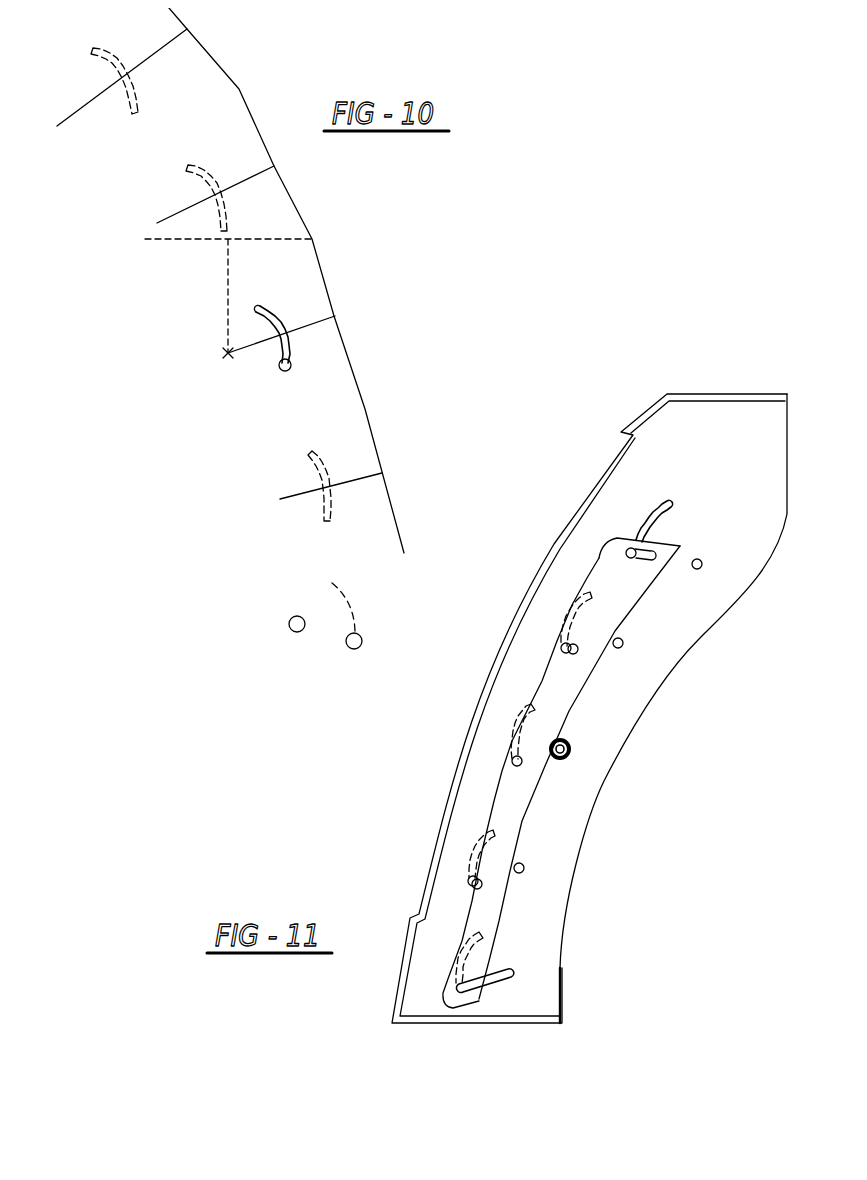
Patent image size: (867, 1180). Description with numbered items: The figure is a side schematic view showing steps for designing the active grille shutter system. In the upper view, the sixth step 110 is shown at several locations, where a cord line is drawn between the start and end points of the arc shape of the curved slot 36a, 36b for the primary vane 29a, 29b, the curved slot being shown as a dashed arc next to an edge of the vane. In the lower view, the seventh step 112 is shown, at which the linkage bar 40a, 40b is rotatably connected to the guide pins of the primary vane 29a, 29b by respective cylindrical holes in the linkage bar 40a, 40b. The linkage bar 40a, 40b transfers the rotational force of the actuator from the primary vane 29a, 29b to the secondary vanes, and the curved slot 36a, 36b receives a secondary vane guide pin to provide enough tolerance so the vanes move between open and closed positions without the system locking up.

In FIG. 10, the sixth step 110 is at (44, 54).
In FIG. 10, the curved slot 36a is at (350, 275).
In FIG. 10, the curved slot 36b is at (270, 312).
In FIG. 10, the primary vane 29a is at (324, 280).
In FIG. 10, the primary vane 29b is at (328, 290).
In FIG. 11, the linkage bar 40a is at (611, 773).
In FIG. 11, the linkage bar 40b is at (623, 590).
In FIG. 11, the seventh step 112 is at (515, 758).